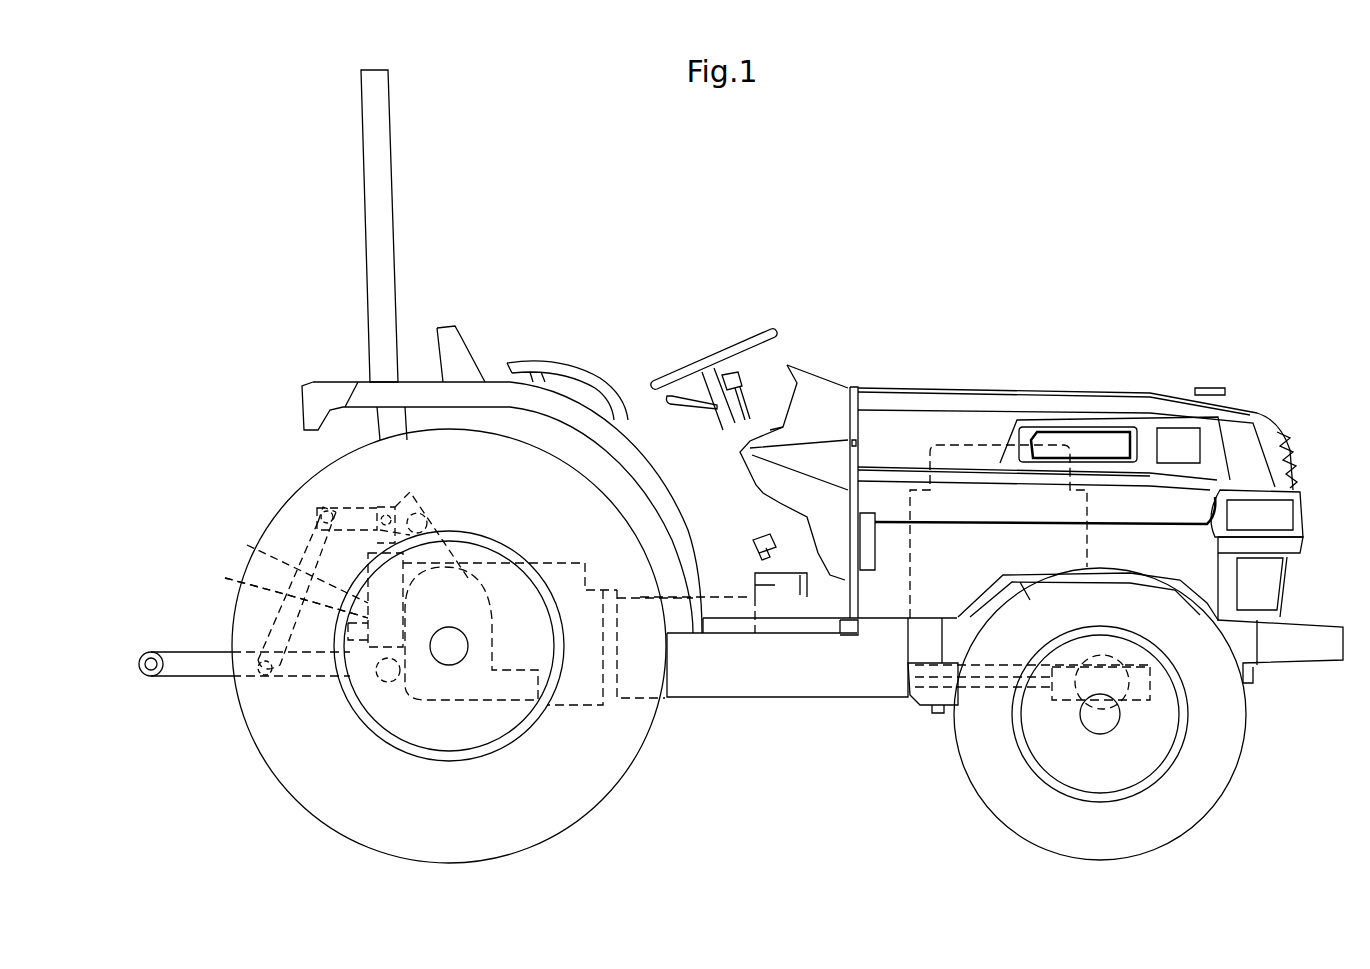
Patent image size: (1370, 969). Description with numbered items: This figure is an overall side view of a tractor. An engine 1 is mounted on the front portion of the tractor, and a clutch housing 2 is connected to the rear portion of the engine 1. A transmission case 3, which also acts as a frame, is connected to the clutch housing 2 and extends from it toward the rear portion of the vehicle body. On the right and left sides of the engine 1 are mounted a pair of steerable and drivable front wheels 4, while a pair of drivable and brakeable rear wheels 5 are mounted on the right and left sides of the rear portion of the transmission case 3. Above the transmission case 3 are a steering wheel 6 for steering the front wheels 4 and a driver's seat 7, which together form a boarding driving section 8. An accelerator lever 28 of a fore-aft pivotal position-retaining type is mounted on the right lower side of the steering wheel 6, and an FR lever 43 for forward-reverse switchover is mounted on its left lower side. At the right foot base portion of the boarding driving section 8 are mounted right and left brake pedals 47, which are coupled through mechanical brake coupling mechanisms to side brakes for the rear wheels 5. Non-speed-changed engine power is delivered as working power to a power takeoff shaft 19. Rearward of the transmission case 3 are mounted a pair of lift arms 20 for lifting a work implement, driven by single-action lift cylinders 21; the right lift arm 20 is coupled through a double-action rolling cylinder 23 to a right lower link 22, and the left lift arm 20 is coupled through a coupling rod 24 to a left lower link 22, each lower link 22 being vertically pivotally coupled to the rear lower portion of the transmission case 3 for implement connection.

The engine 1 is at (972, 443).
The clutch housing 2 is at (787, 585).
The transmission case 3 is at (703, 690).
The front wheels 4 is at (1212, 805).
The rear wheels 5 is at (295, 808).
The steering wheel 6 is at (724, 345).
The driver's seat 7 is at (447, 328).
The boarding driving section 8 is at (616, 318).
The power takeoff shaft 19 is at (348, 680).
The lift arms 20 is at (352, 505).
The lift cylinders 21 is at (262, 560).
The lower link 22 is at (188, 678).
The rolling cylinder 23 is at (272, 630).
The coupling rod 24 is at (259, 605).
The accelerator lever 28 is at (742, 378).
The FR lever 43 is at (672, 406).
The brake pedals 47 is at (757, 546).